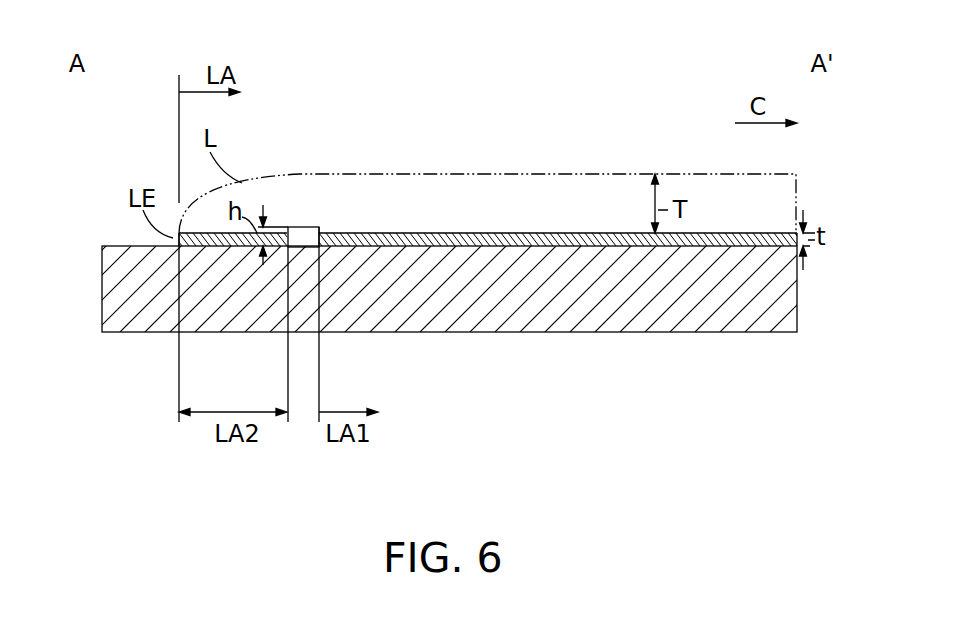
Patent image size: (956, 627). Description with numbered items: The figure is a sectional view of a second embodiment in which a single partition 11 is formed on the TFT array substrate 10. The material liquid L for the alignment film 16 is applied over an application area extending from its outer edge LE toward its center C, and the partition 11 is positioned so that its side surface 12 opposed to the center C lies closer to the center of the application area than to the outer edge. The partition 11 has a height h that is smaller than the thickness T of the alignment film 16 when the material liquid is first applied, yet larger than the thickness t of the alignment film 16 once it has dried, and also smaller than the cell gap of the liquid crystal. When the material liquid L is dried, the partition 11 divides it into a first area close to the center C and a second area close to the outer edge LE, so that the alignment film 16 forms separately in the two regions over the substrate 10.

The TFT array substrate 10 is at (600, 315).
The partition 11 is at (302, 237).
The side surface 12 is at (320, 228).
The alignment film 16 is at (523, 237).